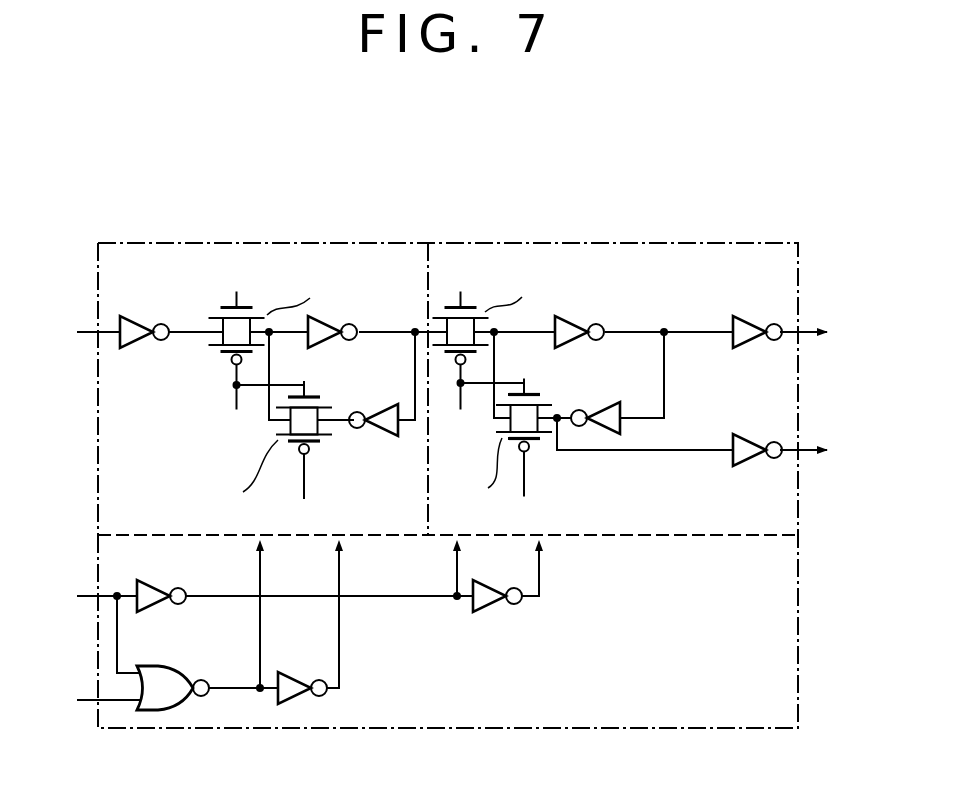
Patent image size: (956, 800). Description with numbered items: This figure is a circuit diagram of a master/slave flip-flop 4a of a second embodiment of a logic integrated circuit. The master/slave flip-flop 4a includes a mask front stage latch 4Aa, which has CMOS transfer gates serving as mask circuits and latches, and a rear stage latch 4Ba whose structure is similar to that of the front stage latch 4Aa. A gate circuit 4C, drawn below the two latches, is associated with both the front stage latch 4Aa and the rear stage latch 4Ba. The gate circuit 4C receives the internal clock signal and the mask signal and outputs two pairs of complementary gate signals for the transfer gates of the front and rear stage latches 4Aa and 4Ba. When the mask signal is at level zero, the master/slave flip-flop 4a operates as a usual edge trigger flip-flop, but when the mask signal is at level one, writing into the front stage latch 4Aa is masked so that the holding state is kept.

The master/slave flip-flop 4a is at (482, 243).
The mask front stage latch 4Aa is at (188, 250).
The rear stage latch 4Ba is at (790, 525).
The gate circuit 4C is at (798, 670).